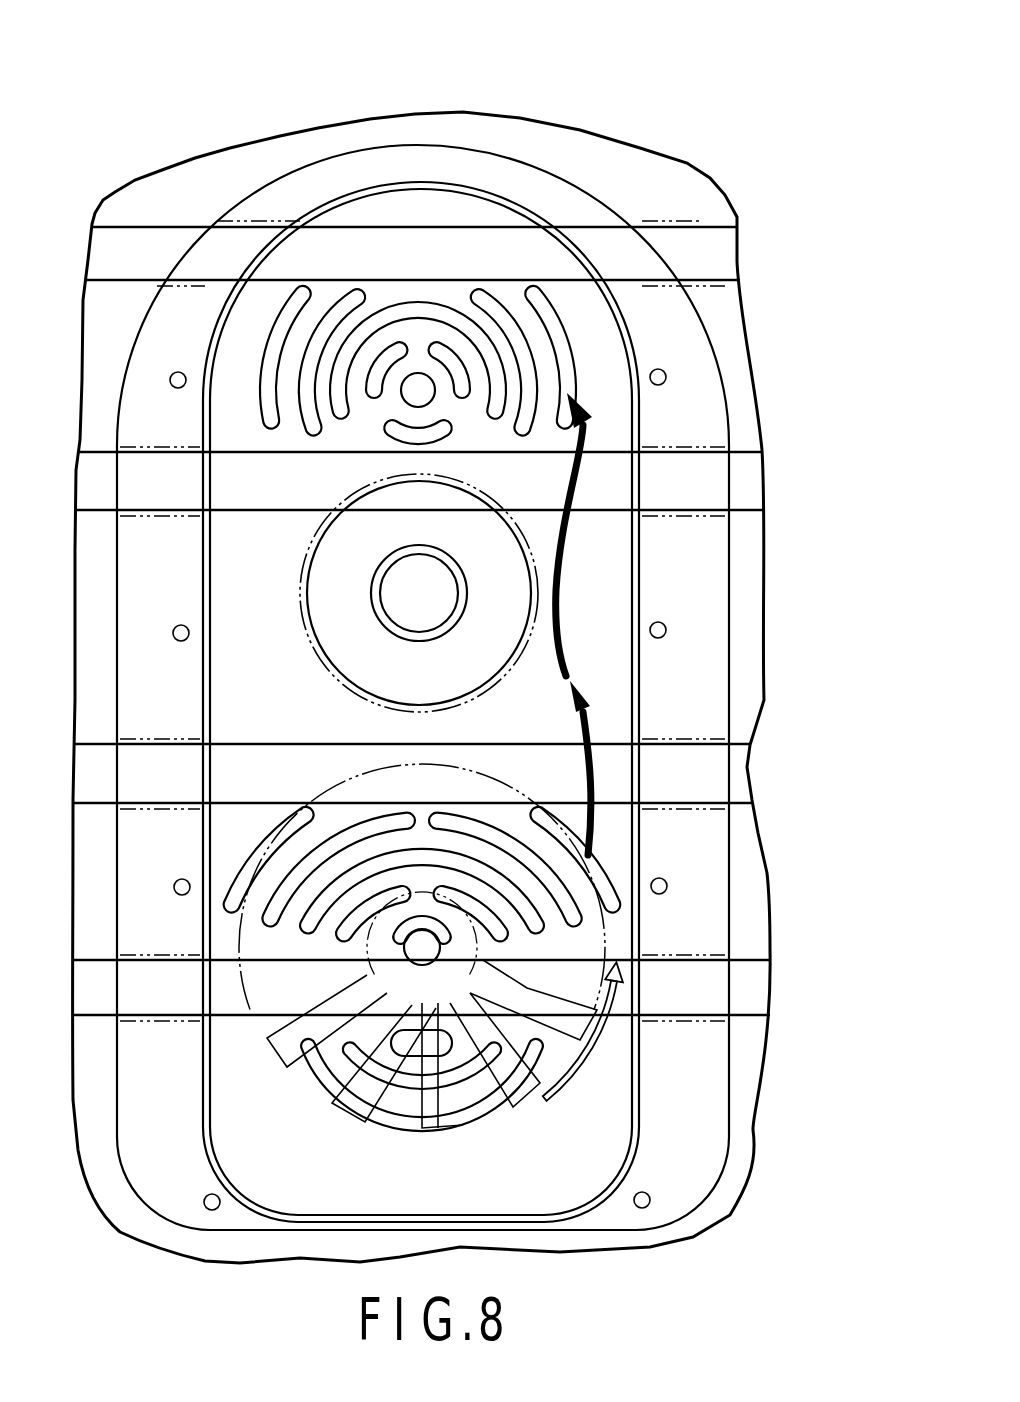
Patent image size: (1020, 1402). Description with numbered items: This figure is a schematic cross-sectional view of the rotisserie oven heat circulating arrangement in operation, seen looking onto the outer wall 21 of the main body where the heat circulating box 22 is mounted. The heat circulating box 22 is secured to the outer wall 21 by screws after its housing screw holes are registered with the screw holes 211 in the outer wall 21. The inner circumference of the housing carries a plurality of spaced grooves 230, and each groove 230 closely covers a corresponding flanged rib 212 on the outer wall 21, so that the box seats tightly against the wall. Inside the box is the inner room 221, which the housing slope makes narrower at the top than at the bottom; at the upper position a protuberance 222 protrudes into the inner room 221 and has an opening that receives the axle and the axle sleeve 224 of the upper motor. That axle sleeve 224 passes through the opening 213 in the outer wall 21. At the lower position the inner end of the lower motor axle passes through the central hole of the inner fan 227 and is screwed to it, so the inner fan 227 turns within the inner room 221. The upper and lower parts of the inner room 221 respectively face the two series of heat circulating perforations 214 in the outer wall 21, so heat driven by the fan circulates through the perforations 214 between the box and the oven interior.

The outer wall 21 is at (416, 110).
The screw hole 211 is at (510, 114).
The heat circulating box 22 is at (597, 197).
The heat circulating perforations 214 is at (300, 300).
The flanged rib 212 is at (597, 452).
The groove 230 is at (683, 452).
The axle sleeve 224 is at (430, 590).
The opening 213 is at (458, 603).
The protuberance 222 is at (527, 649).
The inner room 221 is at (633, 720).
The inner fan 227 is at (548, 1103).